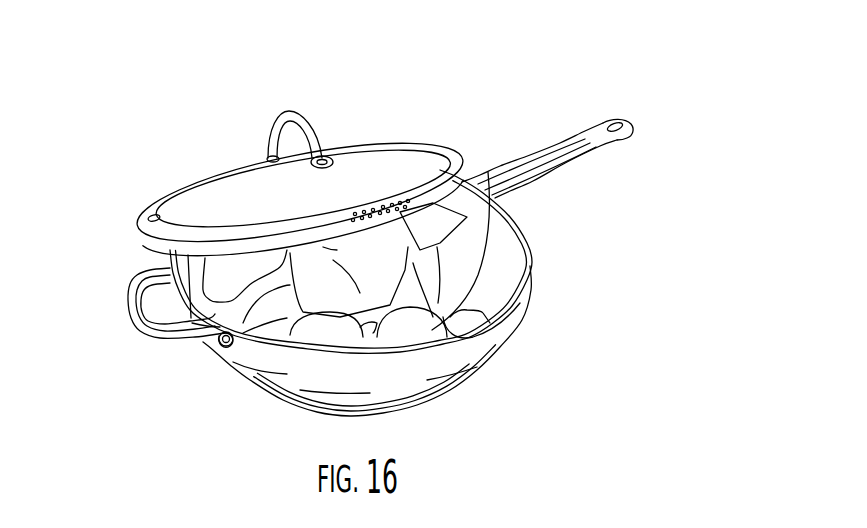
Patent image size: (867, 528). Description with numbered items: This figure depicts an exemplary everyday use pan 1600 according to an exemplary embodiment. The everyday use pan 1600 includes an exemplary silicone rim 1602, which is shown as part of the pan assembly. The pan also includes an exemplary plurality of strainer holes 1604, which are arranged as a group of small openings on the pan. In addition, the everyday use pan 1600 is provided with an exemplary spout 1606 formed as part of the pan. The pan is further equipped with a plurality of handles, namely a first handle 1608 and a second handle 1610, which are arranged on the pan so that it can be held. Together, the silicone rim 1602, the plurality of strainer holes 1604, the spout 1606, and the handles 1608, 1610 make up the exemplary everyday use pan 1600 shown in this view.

The everyday use pan 1600 is at (716, 46).
The silicone rim 1602 is at (463, 167).
The plurality of strainer holes 1604 is at (405, 206).
The spout 1606 is at (503, 339).
The handle 1608 is at (130, 306).
The handle 1610 is at (560, 157).